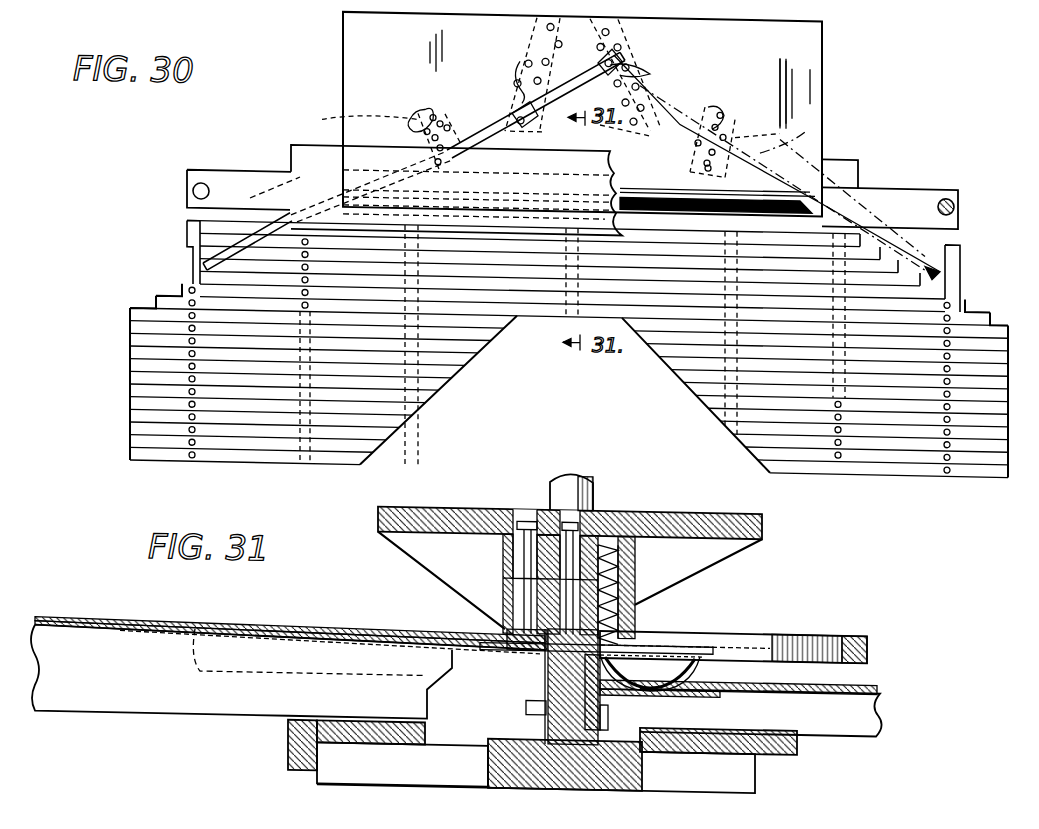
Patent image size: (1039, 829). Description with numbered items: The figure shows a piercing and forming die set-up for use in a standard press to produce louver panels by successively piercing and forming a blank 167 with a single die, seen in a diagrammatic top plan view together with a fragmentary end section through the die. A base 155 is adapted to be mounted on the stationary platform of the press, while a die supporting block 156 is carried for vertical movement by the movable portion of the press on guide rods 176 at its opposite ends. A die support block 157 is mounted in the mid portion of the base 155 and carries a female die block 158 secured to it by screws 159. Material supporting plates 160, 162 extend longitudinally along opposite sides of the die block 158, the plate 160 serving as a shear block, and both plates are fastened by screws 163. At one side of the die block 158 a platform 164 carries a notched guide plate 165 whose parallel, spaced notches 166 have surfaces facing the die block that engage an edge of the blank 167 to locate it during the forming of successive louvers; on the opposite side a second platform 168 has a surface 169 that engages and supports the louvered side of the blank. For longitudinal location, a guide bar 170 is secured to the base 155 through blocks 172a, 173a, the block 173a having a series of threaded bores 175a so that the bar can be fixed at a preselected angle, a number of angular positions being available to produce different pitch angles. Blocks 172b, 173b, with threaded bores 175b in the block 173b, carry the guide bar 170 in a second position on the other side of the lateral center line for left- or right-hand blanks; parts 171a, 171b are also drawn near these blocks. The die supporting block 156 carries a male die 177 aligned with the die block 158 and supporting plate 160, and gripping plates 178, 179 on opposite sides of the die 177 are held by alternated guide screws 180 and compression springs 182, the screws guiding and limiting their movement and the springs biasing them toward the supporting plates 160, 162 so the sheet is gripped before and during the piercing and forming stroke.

In FIG. 30, the base 155 is at (903, 174).
In FIG. 31, the base 155 is at (759, 765).
In FIG. 30, the die supporting block 156 is at (288, 162).
In FIG. 31, the die supporting block 156 is at (718, 550).
In FIG. 31, the die support block 157 is at (572, 780).
In FIG. 30, the female die block 158 is at (826, 182).
In FIG. 31, the female die block 158 is at (551, 704).
In FIG. 31, the screws 159 is at (624, 687).
In FIG. 31, the material supporting plate 160 is at (553, 670).
In FIG. 31, the material supporting plate 162 is at (604, 718).
In FIG. 31, the screws 163 is at (648, 701).
In FIG. 31, the platform 164 is at (202, 720).
In FIG. 30, the notched guide plate 165 is at (130, 388).
In FIG. 31, the notched guide plate 165 is at (117, 626).
In FIG. 30, the notches 166 is at (145, 340).
In FIG. 31, the notches 166 is at (100, 622).
In FIG. 31, the blank 167 is at (315, 633).
In FIG. 31, the second platform 168 is at (867, 716).
In FIG. 30, the surface 169 is at (803, 140).
In FIG. 31, the surface 169 is at (872, 670).
In FIG. 30, the guide bar 170 is at (422, 135).
In FIG. 31, the guide bar 170 is at (843, 624).
In FIG. 30, the hook 171a is at (423, 99).
In FIG. 30, the hook 171b is at (719, 132).
In FIG. 30, the block 172a is at (340, 117).
In FIG. 30, the block 172b is at (752, 112).
In FIG. 30, the block 173a is at (630, 50).
In FIG. 30, the block 173b is at (534, 30).
In FIG. 30, the threaded bores 175a is at (650, 67).
In FIG. 30, the threaded bores 175b is at (526, 59).
In FIG. 30, the guide rods 176 is at (193, 195).
In FIG. 31, the guide rods 176 is at (583, 490).
In FIG. 31, the male die 177 is at (553, 654).
In FIG. 31, the gripping plate 178 is at (506, 622).
In FIG. 31, the gripping plate 179 is at (642, 636).
In FIG. 31, the guide screws 180 is at (522, 587).
In FIG. 31, the compression springs 182 is at (640, 507).